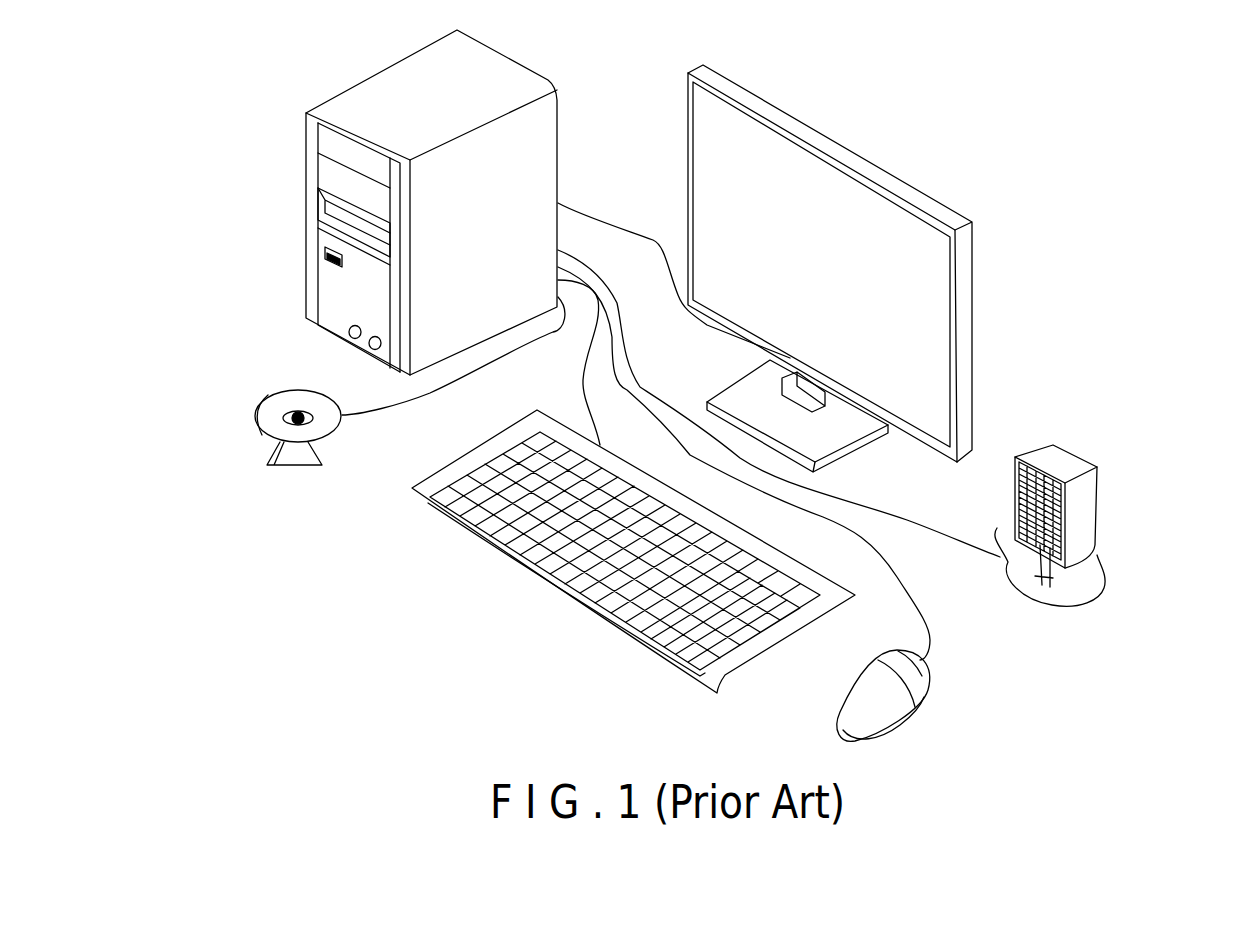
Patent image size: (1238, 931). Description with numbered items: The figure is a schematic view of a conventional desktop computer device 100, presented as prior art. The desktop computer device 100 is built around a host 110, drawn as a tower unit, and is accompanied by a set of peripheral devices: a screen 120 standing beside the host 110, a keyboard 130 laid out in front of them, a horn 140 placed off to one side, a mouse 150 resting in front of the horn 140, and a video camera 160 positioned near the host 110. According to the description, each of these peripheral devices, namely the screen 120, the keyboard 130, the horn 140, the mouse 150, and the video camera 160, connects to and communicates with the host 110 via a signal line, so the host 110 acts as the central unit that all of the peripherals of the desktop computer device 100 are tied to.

The desktop computer device 100 is at (1125, 107).
The host 110 is at (493, 67).
The screen 120 is at (803, 130).
The keyboard 130 is at (410, 487).
The horn 140 is at (1092, 503).
The mouse 150 is at (917, 678).
The video camera 160 is at (280, 402).